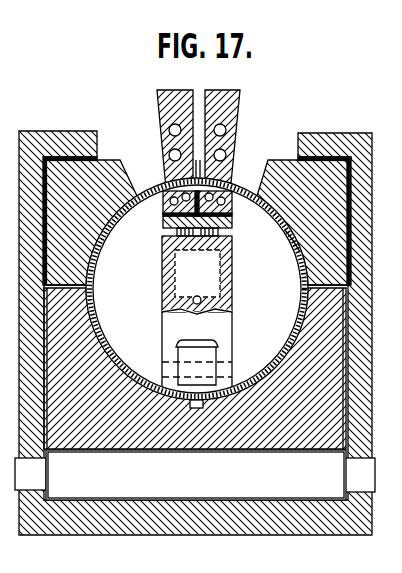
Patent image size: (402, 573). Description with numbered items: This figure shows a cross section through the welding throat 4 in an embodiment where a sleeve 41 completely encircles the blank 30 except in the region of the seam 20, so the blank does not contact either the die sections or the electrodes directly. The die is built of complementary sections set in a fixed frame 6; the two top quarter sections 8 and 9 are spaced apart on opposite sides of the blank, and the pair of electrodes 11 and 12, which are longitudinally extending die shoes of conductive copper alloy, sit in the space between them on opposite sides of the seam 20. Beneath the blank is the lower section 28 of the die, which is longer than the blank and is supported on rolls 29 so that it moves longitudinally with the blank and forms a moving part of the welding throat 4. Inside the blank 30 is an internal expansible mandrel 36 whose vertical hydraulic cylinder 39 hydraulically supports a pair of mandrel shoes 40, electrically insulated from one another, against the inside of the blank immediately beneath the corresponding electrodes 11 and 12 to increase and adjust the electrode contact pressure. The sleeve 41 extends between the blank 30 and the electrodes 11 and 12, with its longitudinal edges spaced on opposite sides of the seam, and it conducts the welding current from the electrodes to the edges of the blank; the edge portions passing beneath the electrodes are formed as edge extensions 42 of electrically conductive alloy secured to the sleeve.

The welding throat 4 is at (288, 238).
The fixed frame 6 is at (53, 131).
The quarter section 8 is at (105, 163).
The quarter section 9 is at (287, 159).
The electrode 11 is at (157, 109).
The electrode 12 is at (240, 120).
The seam 20 is at (203, 176).
The lower section of the die 28 is at (123, 438).
The rolls 29 is at (197, 490).
The blank 30 is at (103, 243).
The internal expansible mandrel 36 is at (240, 319).
The vertical hydraulic cylinder 39 is at (222, 269).
The mandrel shoes 40 is at (157, 207).
The sleeve 41 is at (218, 399).
The edge extensions 42 is at (173, 175).